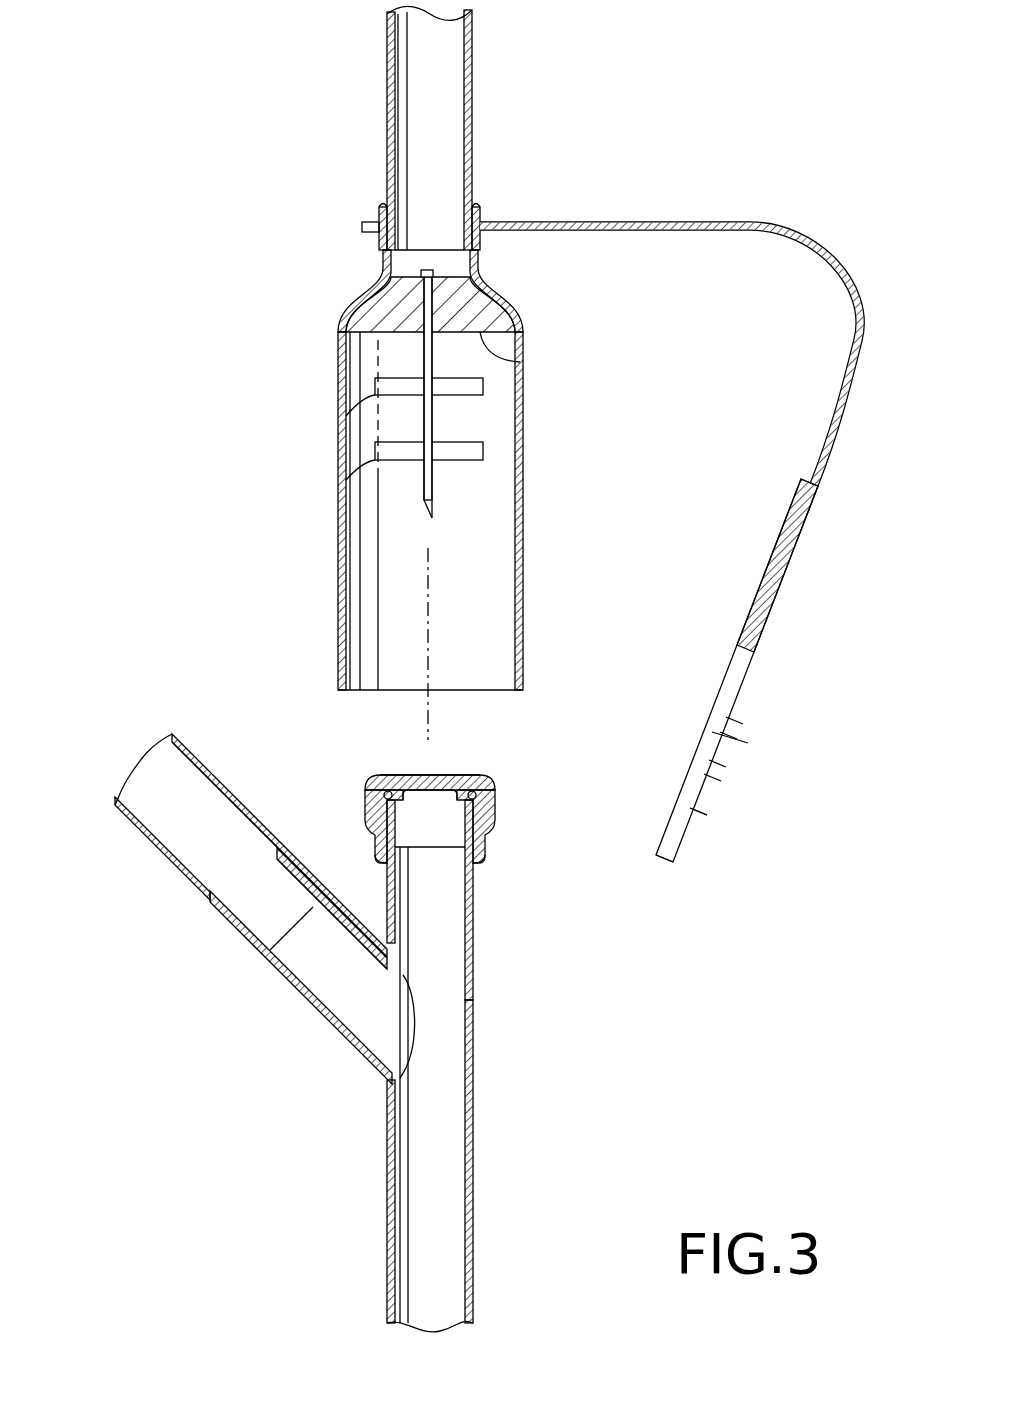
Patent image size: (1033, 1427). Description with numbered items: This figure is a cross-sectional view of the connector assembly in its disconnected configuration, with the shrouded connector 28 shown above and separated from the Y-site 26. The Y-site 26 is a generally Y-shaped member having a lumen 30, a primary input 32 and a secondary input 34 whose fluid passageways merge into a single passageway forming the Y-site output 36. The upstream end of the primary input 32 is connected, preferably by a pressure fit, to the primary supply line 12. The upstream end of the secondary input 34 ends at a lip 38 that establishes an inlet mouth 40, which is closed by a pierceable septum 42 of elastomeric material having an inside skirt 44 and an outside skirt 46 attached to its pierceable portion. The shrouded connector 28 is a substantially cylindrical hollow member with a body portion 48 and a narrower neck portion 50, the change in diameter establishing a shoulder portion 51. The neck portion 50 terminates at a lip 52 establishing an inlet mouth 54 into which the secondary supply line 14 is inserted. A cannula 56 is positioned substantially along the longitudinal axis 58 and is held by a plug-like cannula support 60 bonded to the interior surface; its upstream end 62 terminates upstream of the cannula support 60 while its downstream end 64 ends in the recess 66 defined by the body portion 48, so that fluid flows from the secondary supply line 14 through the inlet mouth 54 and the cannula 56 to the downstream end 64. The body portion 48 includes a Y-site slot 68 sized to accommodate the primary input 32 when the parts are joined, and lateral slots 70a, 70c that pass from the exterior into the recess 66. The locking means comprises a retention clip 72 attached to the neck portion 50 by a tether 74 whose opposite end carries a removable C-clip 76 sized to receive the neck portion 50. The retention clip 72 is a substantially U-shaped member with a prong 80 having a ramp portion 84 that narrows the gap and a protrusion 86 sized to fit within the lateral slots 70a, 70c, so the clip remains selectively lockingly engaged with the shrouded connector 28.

The primary supply line 12 is at (150, 842).
The secondary supply line 14 is at (386, 40).
The Y-site 26 is at (339, 1019).
The shrouded connector 28 is at (373, 488).
The lumen 30 is at (437, 1055).
The primary input 32 is at (335, 1002).
The secondary input 34 is at (436, 878).
The Y-site output 36 is at (430, 1278).
The lip 38 is at (368, 792).
The inlet mouth 40 is at (417, 776).
The pierceable septum 42 is at (494, 783).
The inside skirt 44 is at (405, 823).
The outside skirt 46 is at (483, 858).
The body portion 48 is at (522, 535).
The neck portion 50 is at (382, 255).
The shoulder portion 51 is at (358, 302).
The lip 52 is at (483, 205).
The inlet mouth 54 is at (427, 108).
The cannula 56 is at (435, 407).
The longitudinal axis 58 is at (430, 628).
The cannula support 60 is at (521, 362).
The upstream end 62 is at (438, 272).
The downstream end 64 is at (430, 498).
The recess 66 is at (385, 648).
The Y-site slot 68 is at (340, 458).
The lateral slot 70a is at (375, 385).
The lateral slot 70c is at (380, 462).
The retention clip 72 is at (773, 735).
The tether 74 is at (818, 242).
The C-clip 76 is at (360, 227).
The prong 80 is at (665, 866).
The ramp portion 84 is at (675, 830).
The protrusion 86 is at (705, 748).